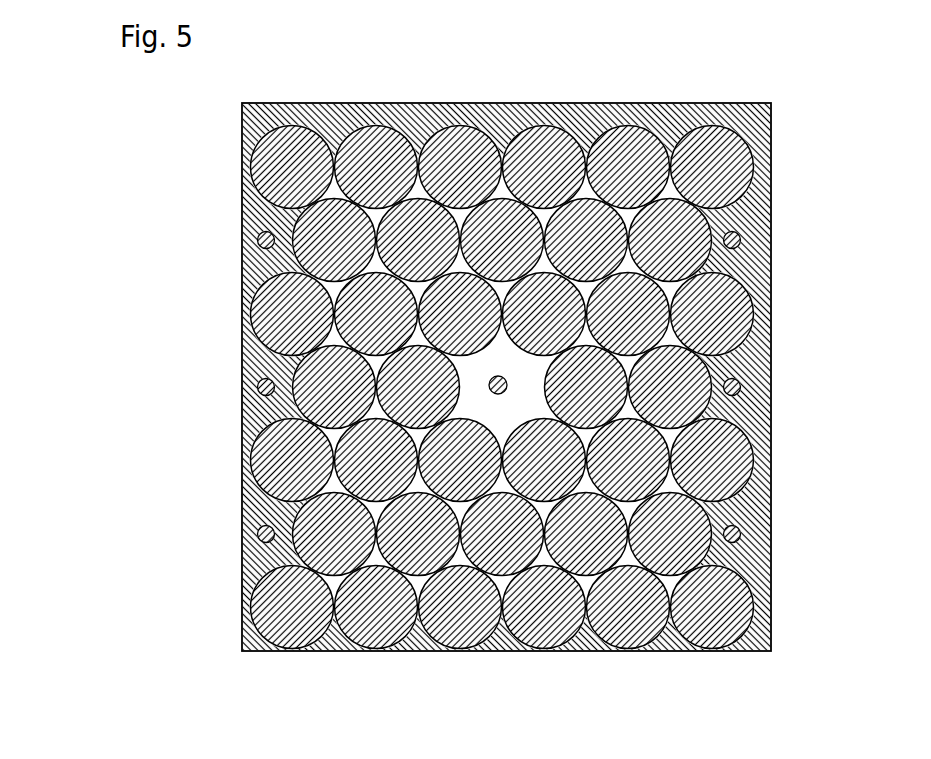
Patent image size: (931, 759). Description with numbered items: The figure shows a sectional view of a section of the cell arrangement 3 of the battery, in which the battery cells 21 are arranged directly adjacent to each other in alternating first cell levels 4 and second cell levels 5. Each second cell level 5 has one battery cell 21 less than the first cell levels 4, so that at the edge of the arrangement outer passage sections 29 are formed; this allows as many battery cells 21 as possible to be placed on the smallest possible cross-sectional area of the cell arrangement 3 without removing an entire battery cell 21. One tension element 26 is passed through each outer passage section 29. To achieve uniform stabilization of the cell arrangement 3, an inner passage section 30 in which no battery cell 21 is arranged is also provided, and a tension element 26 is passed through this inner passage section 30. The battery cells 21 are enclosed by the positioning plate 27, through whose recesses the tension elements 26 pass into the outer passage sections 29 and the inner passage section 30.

The cell arrangement 3 is at (506, 332).
The positioning plate 27 is at (506, 332).
The battery cell 21 is at (475, 352).
The tension element 26 is at (259, 234).
The outer passage section 29 is at (760, 253).
The first cell level 4 is at (215, 158).
The second cell level 5 is at (215, 242).
The inner passage section 30 is at (506, 400).